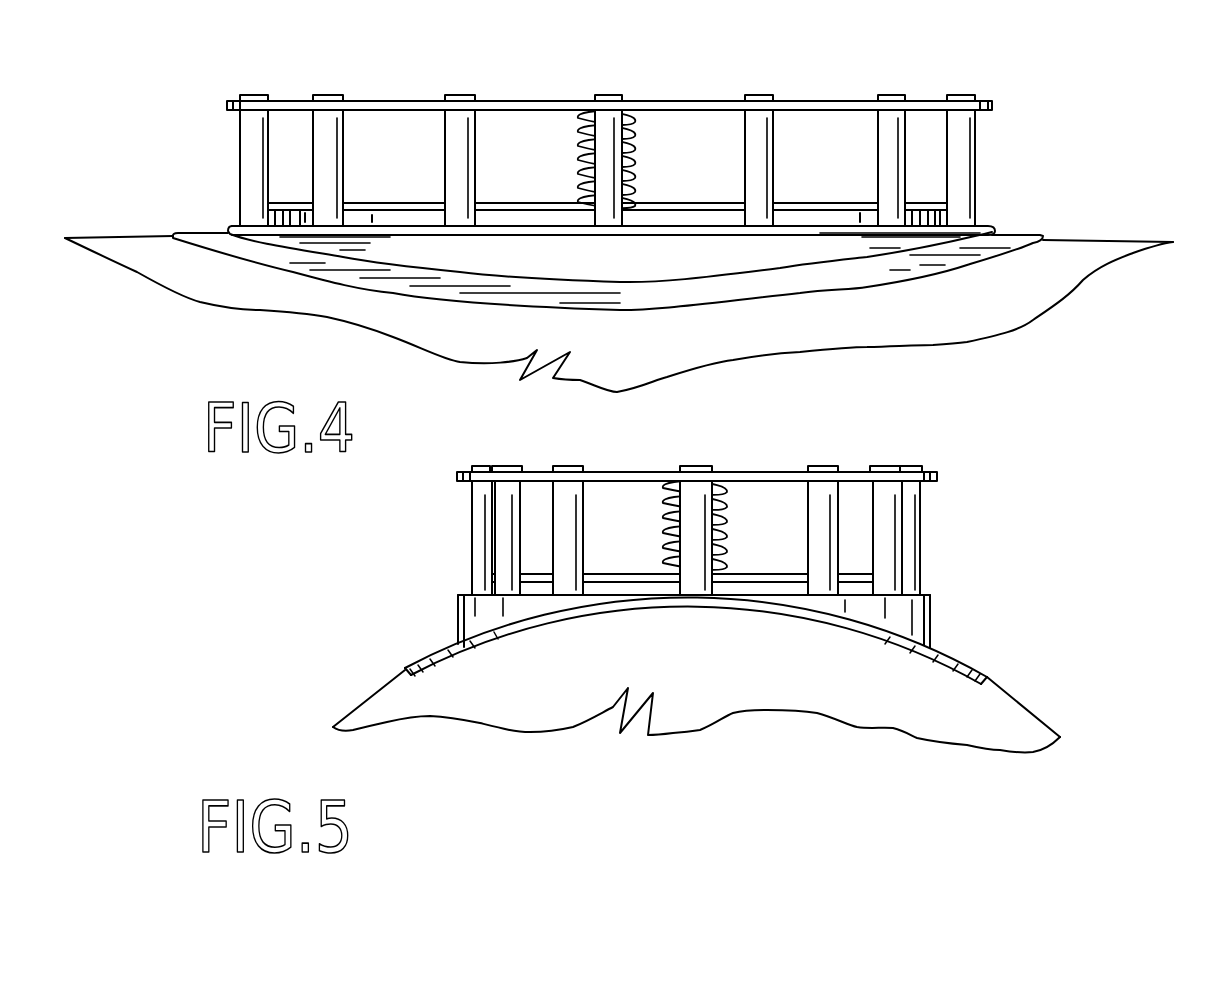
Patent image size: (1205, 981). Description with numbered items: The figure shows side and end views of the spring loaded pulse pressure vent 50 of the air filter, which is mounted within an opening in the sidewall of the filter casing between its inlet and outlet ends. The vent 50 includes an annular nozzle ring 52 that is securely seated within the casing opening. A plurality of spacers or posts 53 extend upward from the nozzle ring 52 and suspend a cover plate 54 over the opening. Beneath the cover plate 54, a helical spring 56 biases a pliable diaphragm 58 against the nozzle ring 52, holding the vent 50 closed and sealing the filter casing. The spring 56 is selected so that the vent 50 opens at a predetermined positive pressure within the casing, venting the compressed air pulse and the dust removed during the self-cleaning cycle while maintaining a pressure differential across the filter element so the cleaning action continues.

In FIG. 4, the pulse pressure vent 50 is at (681, 133).
In FIG. 5, the pulse pressure vent 50 is at (791, 526).
In FIG. 4, the annular nozzle ring 52 is at (713, 252).
In FIG. 5, the annular nozzle ring 52 is at (900, 620).
In FIG. 4, the spacers or posts 53 is at (455, 158).
In FIG. 5, the spacers or posts 53 is at (885, 533).
In FIG. 4, the cover plate 54 is at (813, 108).
In FIG. 5, the cover plate 54 is at (750, 473).
In FIG. 4, the helical spring 56 is at (637, 133).
In FIG. 5, the helical spring 56 is at (663, 507).
In FIG. 4, the pliable diaphragm 58 is at (558, 207).
In FIG. 5, the pliable diaphragm 58 is at (740, 575).